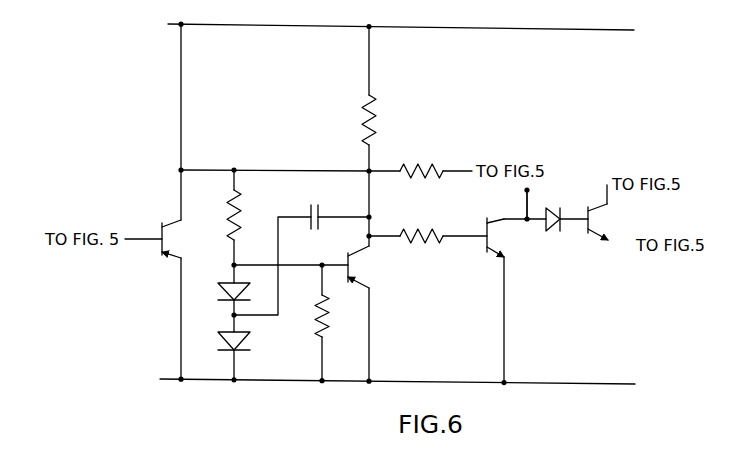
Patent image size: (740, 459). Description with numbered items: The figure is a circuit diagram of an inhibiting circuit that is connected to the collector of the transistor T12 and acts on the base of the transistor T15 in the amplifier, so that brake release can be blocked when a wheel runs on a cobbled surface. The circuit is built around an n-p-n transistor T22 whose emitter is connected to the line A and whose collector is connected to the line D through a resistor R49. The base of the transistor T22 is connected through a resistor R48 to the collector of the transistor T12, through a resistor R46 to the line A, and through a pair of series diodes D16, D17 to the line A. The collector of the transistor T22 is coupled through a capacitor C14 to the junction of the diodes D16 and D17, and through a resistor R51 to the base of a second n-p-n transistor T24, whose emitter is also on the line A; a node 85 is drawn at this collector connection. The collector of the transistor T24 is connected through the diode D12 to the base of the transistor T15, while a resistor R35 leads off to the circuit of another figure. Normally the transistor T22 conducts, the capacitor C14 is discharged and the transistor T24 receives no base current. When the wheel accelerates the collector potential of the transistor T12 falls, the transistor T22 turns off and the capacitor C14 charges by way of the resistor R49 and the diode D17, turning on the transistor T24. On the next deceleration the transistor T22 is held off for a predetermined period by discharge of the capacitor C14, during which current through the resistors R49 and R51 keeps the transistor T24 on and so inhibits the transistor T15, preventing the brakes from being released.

The resistor R49 is at (378, 114).
The resistor R35 is at (423, 166).
The capacitor C14 is at (314, 203).
The resistor R48 is at (225, 232).
The transistor T12 is at (176, 235).
The diode D16 is at (218, 293).
The diode D17 is at (218, 342).
The resistor R46 is at (325, 320).
The n-p-n transistor T22 is at (362, 266).
The resistor R51 is at (425, 243).
The n-p-n transistor T24 is at (500, 238).
The node 85 is at (527, 190).
The diode D12 is at (554, 206).
The transistor T15 is at (612, 228).
The line D is at (470, 26).
The line A is at (523, 384).